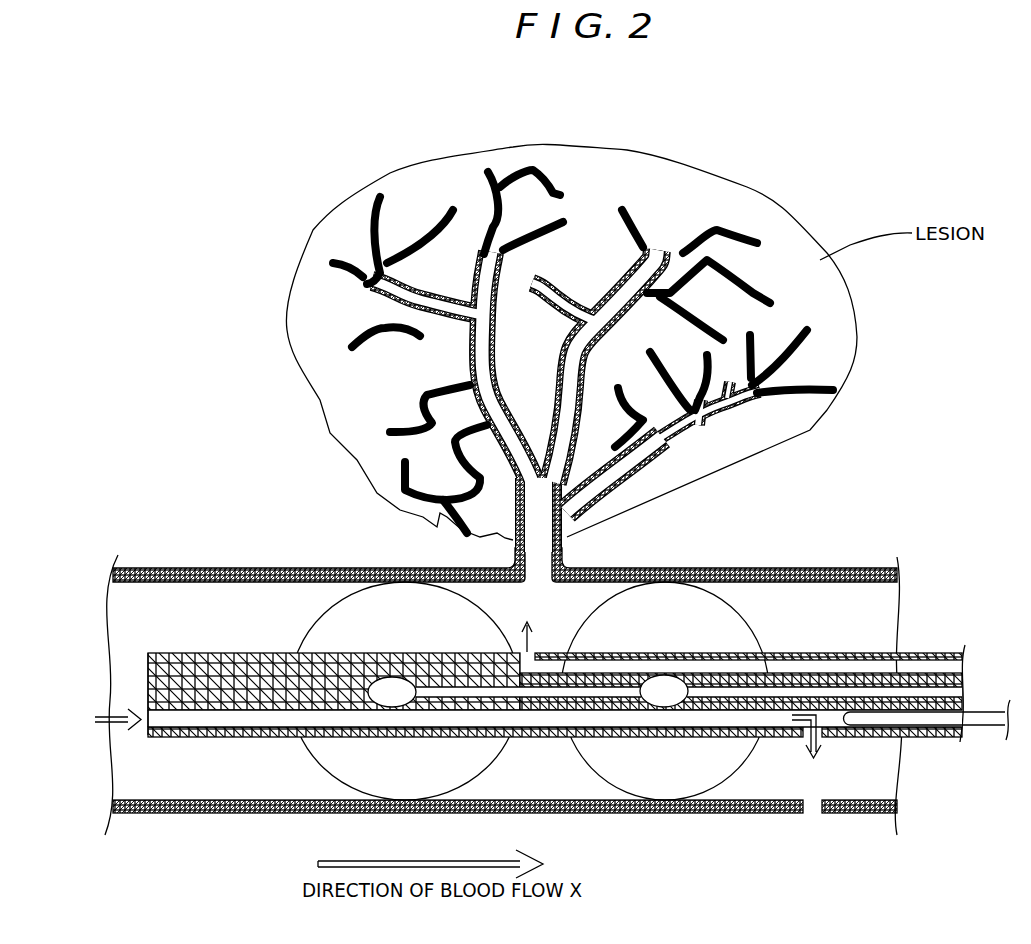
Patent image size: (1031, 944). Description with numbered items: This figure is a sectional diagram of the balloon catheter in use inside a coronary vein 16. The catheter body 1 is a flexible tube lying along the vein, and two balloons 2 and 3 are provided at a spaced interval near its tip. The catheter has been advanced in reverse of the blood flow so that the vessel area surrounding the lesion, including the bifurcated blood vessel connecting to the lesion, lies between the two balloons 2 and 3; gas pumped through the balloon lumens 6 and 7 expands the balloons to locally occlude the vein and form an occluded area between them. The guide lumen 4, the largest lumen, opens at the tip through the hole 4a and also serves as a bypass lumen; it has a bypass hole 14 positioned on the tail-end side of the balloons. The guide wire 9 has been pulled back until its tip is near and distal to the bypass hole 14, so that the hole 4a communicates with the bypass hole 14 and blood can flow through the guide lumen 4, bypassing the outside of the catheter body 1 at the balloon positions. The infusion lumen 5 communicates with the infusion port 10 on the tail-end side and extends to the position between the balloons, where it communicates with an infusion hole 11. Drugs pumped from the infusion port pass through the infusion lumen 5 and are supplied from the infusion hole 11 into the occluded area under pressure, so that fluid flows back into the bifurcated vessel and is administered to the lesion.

The catheter body 1 is at (221, 638).
The balloon 2 is at (297, 757).
The balloon 3 is at (750, 757).
The guide lumen 4 is at (196, 722).
The hole of the tip 4a is at (146, 725).
The infusion lumen 5 is at (862, 664).
The balloon lumen 6 is at (809, 690).
The balloon lumen 7 is at (535, 690).
The guide wire 9 is at (987, 730).
The infusion port 10 is at (146, 652).
The infusion hole 11 is at (535, 645).
The bypass hole 14 is at (825, 737).
The coronary vein 16 is at (683, 803).